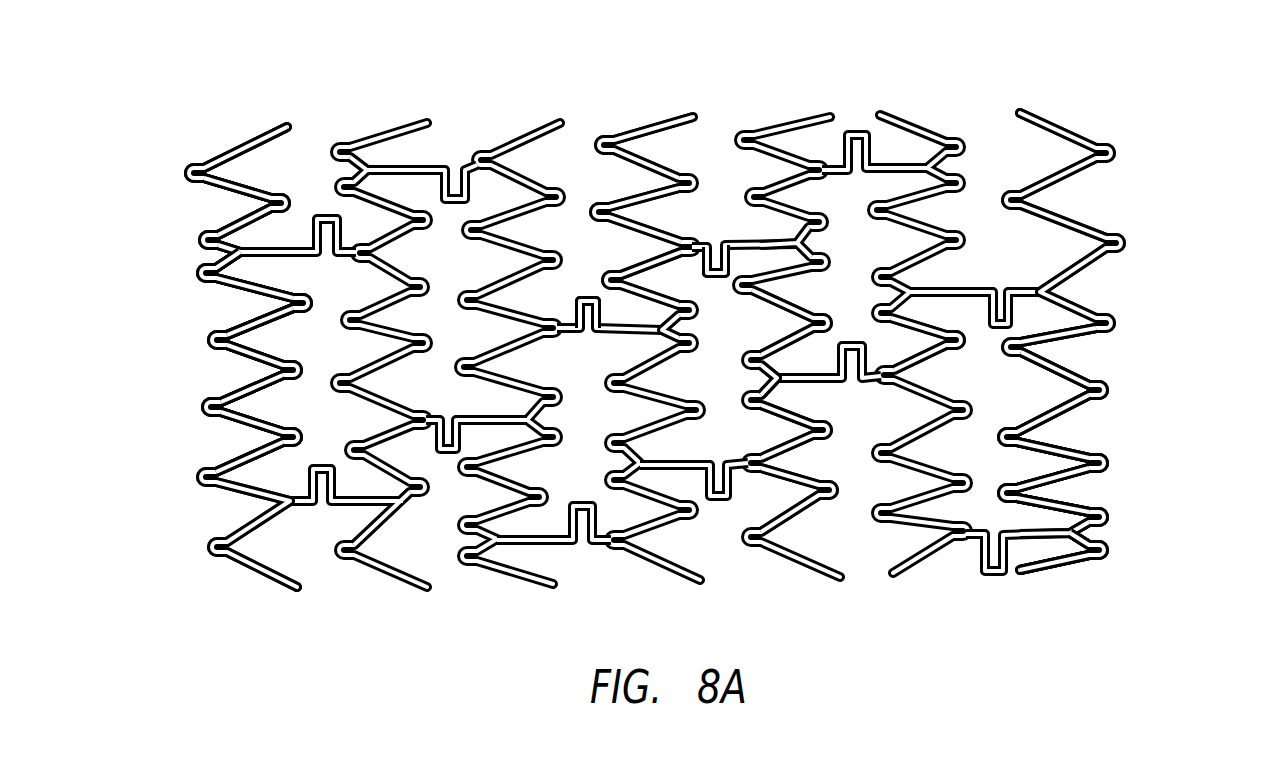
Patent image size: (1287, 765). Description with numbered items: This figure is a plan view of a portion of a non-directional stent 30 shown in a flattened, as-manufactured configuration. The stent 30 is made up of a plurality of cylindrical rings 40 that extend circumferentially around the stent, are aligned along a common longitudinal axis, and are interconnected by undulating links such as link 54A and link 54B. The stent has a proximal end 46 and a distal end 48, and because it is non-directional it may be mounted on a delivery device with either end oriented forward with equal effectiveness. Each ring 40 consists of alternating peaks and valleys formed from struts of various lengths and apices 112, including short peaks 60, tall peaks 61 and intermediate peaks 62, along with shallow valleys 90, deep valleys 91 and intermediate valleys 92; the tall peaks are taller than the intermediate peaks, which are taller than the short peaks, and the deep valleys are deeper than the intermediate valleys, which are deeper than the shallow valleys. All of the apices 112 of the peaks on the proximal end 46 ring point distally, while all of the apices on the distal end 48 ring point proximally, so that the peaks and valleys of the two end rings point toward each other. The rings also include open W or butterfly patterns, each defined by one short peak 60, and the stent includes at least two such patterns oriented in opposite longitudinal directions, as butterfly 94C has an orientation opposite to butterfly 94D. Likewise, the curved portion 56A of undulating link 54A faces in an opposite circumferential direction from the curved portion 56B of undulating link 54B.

The stent 30 is at (678, 327).
The cylindrical ring 40 is at (243, 117).
The proximal end 46 is at (1137, 279).
The distal end 48 is at (130, 308).
The undulating link 54A is at (580, 290).
The undulating link 54B is at (718, 270).
The curved portion 56A is at (573, 292).
The curved portion 56B is at (718, 290).
The short peak 60 is at (236, 257).
The tall peak 61 is at (311, 304).
The intermediate peak 62 is at (290, 203).
The shallow valley 90 is at (213, 234).
The deep valley 91 is at (230, 342).
The intermediate valley 92 is at (238, 168).
The butterfly 94C is at (805, 247).
The butterfly 94D is at (745, 390).
The apex 112 is at (250, 264).